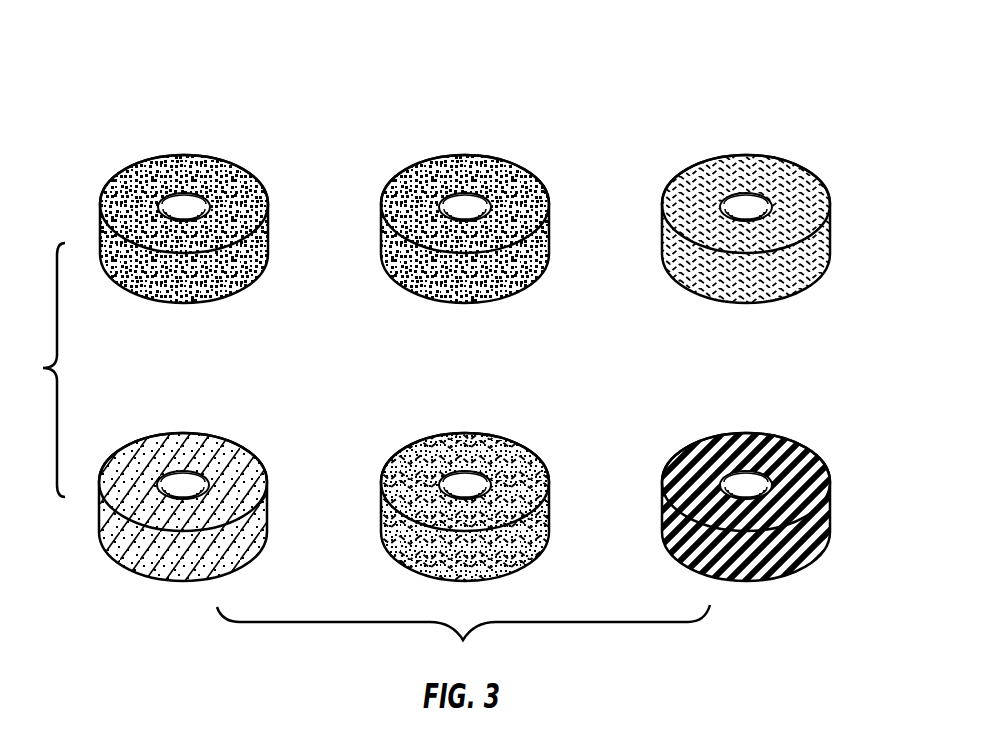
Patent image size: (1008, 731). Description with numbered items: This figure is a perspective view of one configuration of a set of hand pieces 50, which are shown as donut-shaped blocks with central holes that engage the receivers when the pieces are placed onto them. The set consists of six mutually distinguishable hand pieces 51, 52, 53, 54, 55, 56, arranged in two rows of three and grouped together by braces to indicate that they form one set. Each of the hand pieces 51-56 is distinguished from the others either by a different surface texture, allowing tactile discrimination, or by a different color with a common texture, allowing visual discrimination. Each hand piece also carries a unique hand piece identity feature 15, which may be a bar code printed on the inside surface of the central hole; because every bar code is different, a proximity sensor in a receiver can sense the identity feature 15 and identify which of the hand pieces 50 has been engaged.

The hand pieces 50 is at (757, 104).
The hand piece 51 is at (139, 170).
The hand piece 52 is at (424, 173).
The hand piece 53 is at (699, 173).
The hand piece 54 is at (139, 448).
The hand piece 55 is at (424, 448).
The hand piece 56 is at (699, 448).
The hand piece identity feature 15 is at (204, 199).